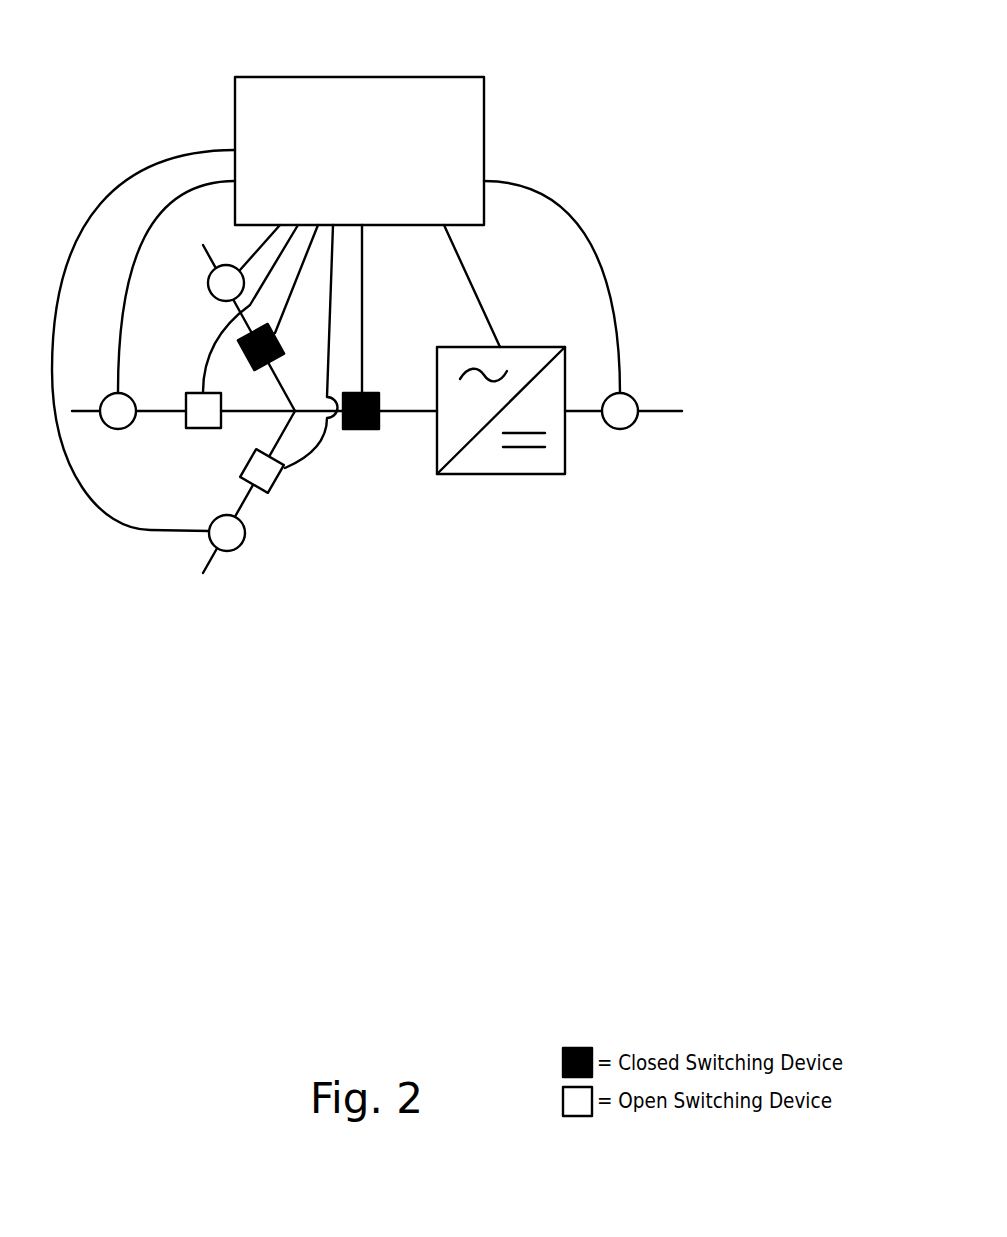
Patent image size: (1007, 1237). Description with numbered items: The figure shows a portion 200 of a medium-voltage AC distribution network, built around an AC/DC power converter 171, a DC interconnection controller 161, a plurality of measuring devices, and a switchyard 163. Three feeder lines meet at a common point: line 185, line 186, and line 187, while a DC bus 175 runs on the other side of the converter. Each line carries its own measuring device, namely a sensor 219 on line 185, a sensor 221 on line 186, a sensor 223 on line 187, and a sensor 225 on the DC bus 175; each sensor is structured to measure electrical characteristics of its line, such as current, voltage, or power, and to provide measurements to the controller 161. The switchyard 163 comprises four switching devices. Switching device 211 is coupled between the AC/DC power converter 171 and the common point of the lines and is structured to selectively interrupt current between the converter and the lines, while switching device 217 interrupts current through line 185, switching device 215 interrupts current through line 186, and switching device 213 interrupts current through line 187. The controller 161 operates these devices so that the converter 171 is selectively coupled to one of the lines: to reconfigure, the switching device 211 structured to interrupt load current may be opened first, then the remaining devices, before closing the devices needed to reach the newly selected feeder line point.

The DC interconnection controller 161 is at (443, 77).
The portion 200 is at (607, 76).
The switchyard 163 is at (377, 509).
The line 186 is at (90, 407).
The DC bus 175 is at (652, 405).
The line 185 is at (209, 245).
The line 187 is at (208, 578).
The sensor 219 is at (208, 284).
The switching device 217 is at (241, 354).
The sensor 221 is at (118, 430).
The switching device 215 is at (203, 430).
The switching device 211 is at (368, 430).
The AC/DC power converter 171 is at (531, 347).
The sensor 225 is at (622, 430).
The switching device 213 is at (279, 483).
The sensor 223 is at (246, 533).